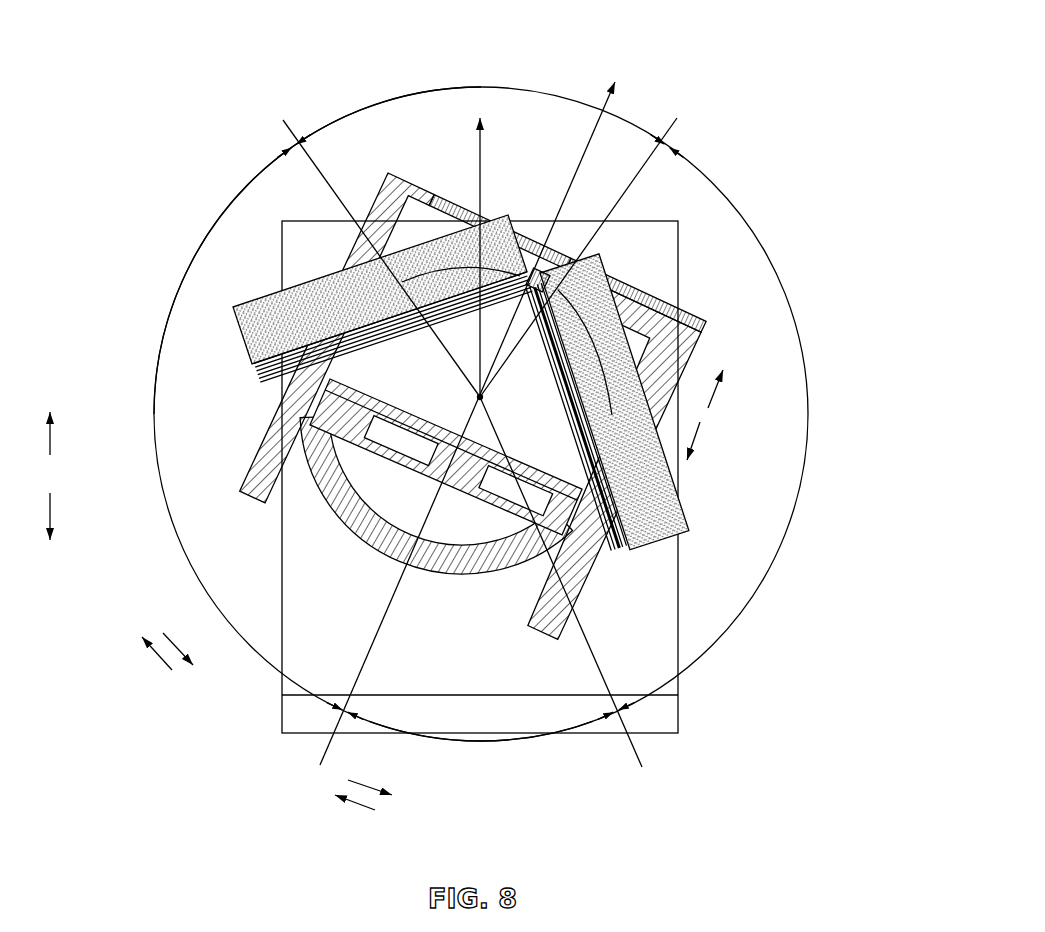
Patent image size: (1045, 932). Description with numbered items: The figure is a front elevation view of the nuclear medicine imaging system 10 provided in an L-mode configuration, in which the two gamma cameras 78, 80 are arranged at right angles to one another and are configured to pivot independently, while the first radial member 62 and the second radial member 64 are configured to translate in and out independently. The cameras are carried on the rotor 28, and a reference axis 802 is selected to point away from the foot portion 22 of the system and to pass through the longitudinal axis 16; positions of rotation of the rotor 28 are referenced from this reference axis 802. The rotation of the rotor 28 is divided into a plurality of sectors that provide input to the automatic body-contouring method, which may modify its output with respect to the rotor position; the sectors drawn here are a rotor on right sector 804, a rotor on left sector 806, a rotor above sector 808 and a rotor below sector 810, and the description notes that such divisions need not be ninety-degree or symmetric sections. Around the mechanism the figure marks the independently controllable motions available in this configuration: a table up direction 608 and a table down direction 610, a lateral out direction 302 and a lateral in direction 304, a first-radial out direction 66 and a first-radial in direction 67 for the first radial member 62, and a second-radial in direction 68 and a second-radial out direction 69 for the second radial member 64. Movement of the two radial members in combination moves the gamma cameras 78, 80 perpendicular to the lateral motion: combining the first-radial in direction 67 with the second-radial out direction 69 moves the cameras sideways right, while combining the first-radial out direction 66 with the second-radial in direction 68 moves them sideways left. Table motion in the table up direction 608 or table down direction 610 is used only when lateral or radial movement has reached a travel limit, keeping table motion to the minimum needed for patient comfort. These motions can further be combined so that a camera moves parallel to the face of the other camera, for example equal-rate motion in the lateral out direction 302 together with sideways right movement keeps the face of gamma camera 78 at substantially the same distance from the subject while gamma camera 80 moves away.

The nuclear medicine imaging system 10 is at (224, 44).
The longitudinal axis 16 is at (481, 398).
The foot portion 22 is at (500, 726).
The rotor 28 is at (465, 570).
The first radial member 62 is at (438, 202).
The second radial member 64 is at (630, 292).
The Radial-1 out direction 66 is at (163, 638).
The Radial-1 in direction 67 is at (162, 662).
The Radial-2 in direction 68 is at (365, 810).
The Radial-2 out direction 69 is at (365, 782).
The gamma camera 78 is at (246, 346).
The gamma camera 80 is at (683, 536).
The lateral out direction 302 is at (713, 400).
The lateral in direction 304 is at (700, 428).
The table up direction 608 is at (50, 450).
The table down direction 610 is at (50, 505).
The reference axis 802 is at (481, 160).
The rotor on right sector 804 is at (784, 541).
The rotor on left sector 806 is at (178, 267).
The rotor above sector 808 is at (370, 102).
The rotor below sector 810 is at (484, 743).